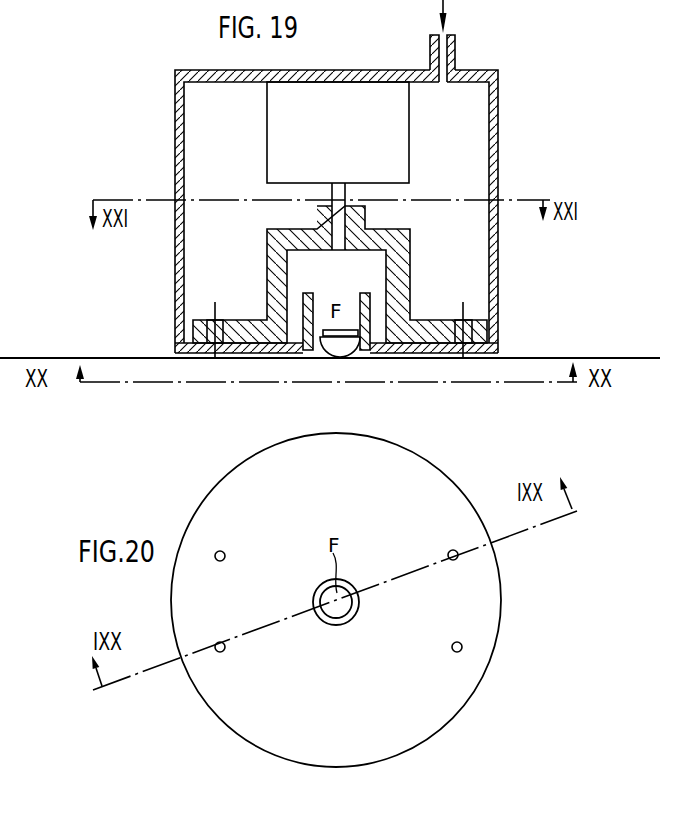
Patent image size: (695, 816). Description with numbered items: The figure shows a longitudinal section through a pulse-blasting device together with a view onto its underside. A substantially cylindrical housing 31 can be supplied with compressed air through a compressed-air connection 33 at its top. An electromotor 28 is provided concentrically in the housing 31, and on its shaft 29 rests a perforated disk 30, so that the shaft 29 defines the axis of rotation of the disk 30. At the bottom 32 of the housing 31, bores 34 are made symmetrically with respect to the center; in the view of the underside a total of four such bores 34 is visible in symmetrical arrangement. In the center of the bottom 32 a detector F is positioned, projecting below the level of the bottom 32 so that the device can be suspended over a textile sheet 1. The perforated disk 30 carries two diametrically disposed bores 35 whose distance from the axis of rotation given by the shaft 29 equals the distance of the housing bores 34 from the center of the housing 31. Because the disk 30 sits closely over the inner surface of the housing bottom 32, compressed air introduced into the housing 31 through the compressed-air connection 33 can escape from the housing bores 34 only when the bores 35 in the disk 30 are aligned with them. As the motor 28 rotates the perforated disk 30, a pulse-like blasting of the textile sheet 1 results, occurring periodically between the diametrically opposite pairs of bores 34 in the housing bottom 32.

In FIG. 19, the textile sheet 1 is at (625, 357).
In FIG. 19, the electromotor 28 is at (338, 132).
In FIG. 19, the shaft 29 is at (338, 190).
In FIG. 19, the perforated disk 30 is at (427, 322).
In FIG. 19, the housing 31 is at (500, 115).
In FIG. 19, the bottom 32 is at (490, 352).
In FIG. 20, the bottom 32 is at (447, 683).
In FIG. 19, the compressed-air connection 33 is at (455, 40).
In FIG. 19, the bores 34 is at (175, 343).
In FIG. 20, the bores 34 is at (219, 551).
In FIG. 19, the bores 35 is at (213, 313).